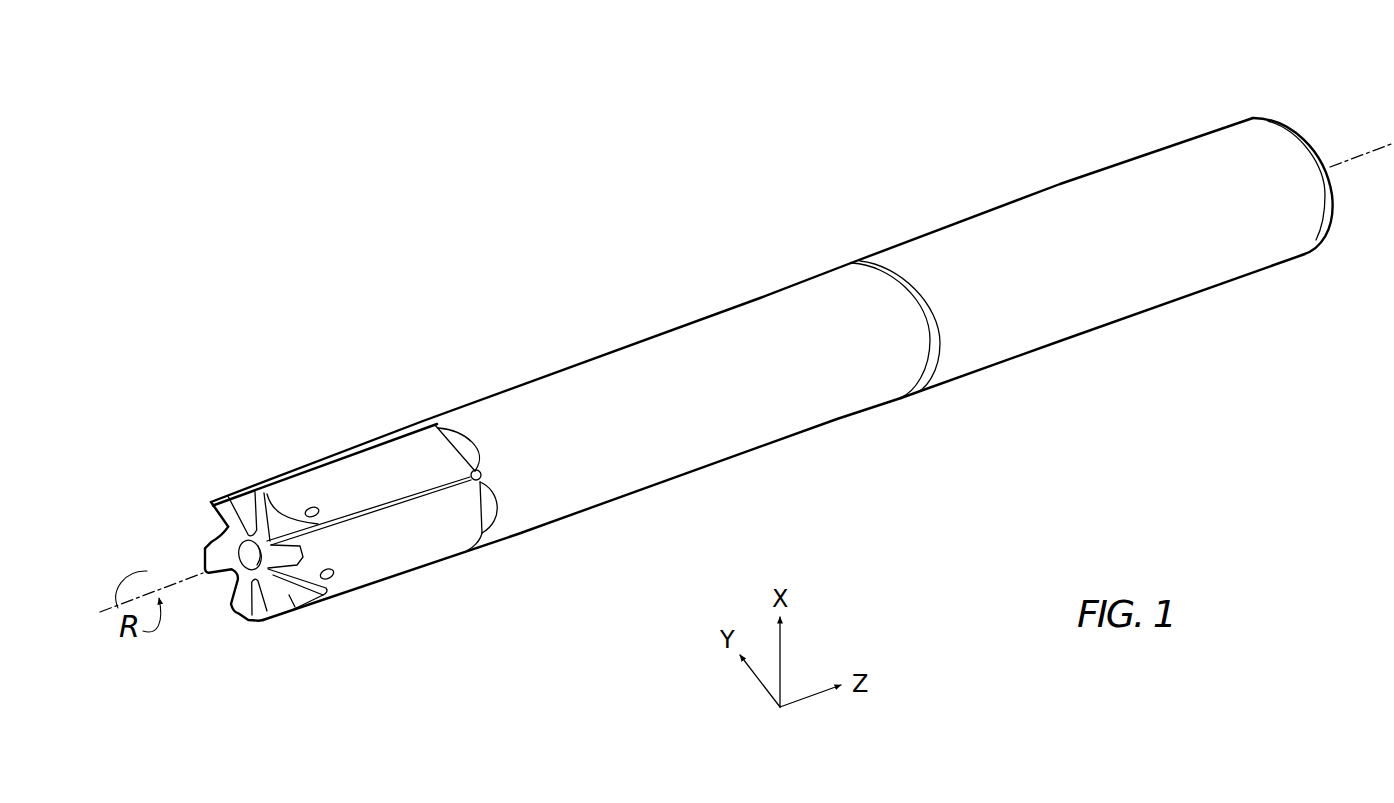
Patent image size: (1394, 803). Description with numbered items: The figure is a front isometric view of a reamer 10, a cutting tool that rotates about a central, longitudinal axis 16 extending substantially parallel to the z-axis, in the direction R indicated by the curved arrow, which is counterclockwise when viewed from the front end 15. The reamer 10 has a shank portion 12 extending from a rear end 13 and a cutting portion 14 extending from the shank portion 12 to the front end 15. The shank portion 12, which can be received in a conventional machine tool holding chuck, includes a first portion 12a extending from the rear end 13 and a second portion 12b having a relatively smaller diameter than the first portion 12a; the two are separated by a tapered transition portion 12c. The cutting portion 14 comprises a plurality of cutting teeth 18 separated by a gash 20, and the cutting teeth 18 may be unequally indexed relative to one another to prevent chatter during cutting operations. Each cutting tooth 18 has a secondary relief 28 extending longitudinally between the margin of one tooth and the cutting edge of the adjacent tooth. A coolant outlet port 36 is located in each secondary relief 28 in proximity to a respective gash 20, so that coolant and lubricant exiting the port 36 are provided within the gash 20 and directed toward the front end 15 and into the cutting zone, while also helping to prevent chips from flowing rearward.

The reamer 10 is at (486, 159).
The shank portion 12 is at (827, 236).
The first portion 12a is at (1090, 203).
The second portion 12b is at (660, 360).
The tapered transition portion 12c is at (853, 263).
The rear end 13 is at (1323, 122).
The cutting portion 14 is at (359, 399).
The front end 15 is at (176, 570).
The central longitudinal axis 16 is at (1368, 148).
The cutting teeth 18 is at (207, 496).
The gash 20 is at (291, 513).
The secondary relief 28 is at (377, 477).
The coolant outlet port 36 is at (313, 508).